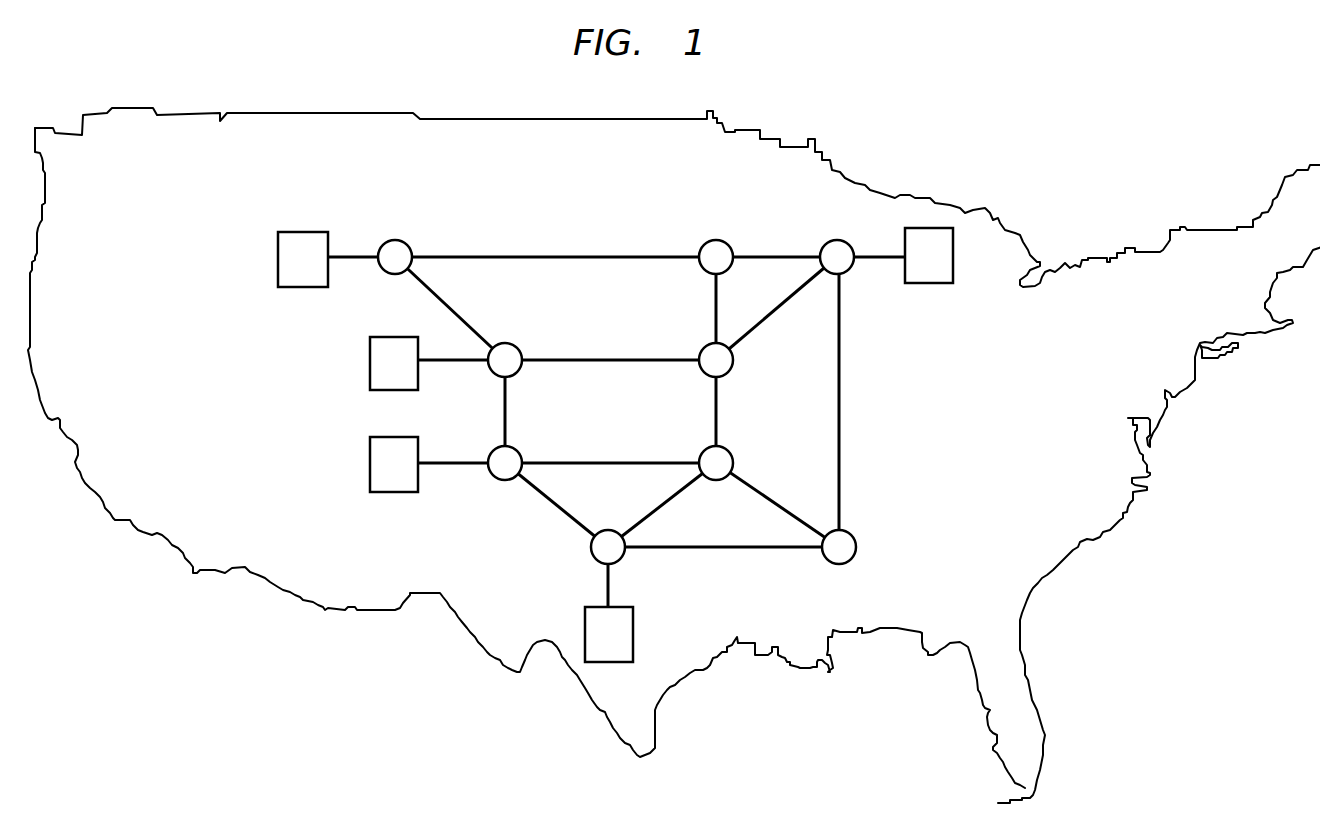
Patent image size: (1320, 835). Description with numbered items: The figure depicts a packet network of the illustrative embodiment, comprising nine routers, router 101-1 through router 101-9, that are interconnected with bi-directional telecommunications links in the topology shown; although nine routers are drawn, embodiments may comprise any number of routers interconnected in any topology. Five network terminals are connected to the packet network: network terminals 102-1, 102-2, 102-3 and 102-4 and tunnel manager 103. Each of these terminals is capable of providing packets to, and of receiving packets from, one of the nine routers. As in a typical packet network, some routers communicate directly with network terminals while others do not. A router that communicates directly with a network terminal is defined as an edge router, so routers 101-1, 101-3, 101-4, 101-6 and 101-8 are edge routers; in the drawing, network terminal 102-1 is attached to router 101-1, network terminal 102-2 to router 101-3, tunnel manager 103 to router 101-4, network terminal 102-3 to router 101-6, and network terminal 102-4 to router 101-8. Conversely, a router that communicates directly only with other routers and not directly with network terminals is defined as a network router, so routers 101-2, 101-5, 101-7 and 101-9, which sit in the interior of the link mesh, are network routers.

The router 101-1 is at (404, 246).
The router 101-2 is at (712, 241).
The router 101-3 is at (834, 241).
The router 101-4 is at (512, 344).
The router 101-5 is at (733, 363).
The router 101-6 is at (516, 451).
The router 101-7 is at (733, 458).
The router 101-8 is at (594, 553).
The router 101-9 is at (856, 541).
The network terminal 102-1 is at (290, 232).
The network terminal 102-2 is at (930, 283).
The network terminal 102-3 is at (370, 464).
The network terminal 102-4 is at (633, 637).
The tunnel manager 103 is at (370, 361).